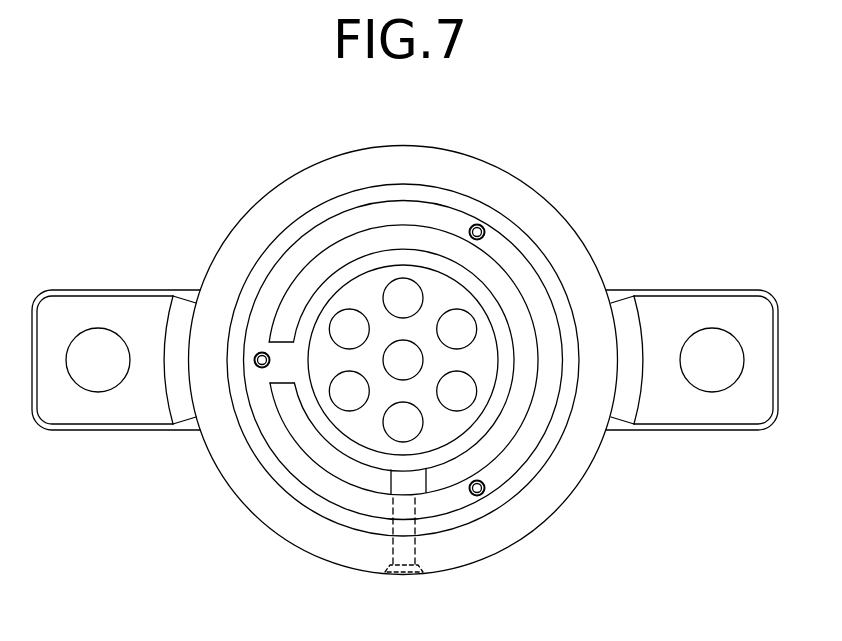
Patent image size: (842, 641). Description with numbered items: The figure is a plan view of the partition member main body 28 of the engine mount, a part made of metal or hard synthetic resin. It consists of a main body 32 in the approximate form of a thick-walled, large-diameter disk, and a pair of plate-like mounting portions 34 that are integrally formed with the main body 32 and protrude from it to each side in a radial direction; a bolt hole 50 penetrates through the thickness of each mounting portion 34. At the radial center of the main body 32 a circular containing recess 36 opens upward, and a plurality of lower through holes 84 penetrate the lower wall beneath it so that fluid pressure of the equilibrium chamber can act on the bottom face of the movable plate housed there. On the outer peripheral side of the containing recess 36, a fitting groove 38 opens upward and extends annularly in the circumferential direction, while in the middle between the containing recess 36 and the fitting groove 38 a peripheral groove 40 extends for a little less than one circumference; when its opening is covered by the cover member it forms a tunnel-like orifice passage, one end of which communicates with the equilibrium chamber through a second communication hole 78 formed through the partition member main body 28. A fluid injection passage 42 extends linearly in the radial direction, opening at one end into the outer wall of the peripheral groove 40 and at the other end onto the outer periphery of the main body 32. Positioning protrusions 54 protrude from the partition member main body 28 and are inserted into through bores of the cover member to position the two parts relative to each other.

The partition member main body 28 is at (590, 190).
The main body 32 is at (431, 168).
The mounting portion 34 is at (137, 405).
The containing recess 36 is at (497, 356).
The fitting groove 38 is at (270, 256).
The peripheral groove 40 is at (325, 254).
The fluid injection passage 42 is at (410, 574).
The bolt hole 50 is at (109, 326).
The positioning protrusion 54 is at (479, 229).
The second communication hole 78 is at (345, 472).
The lower through hole 84 is at (406, 285).